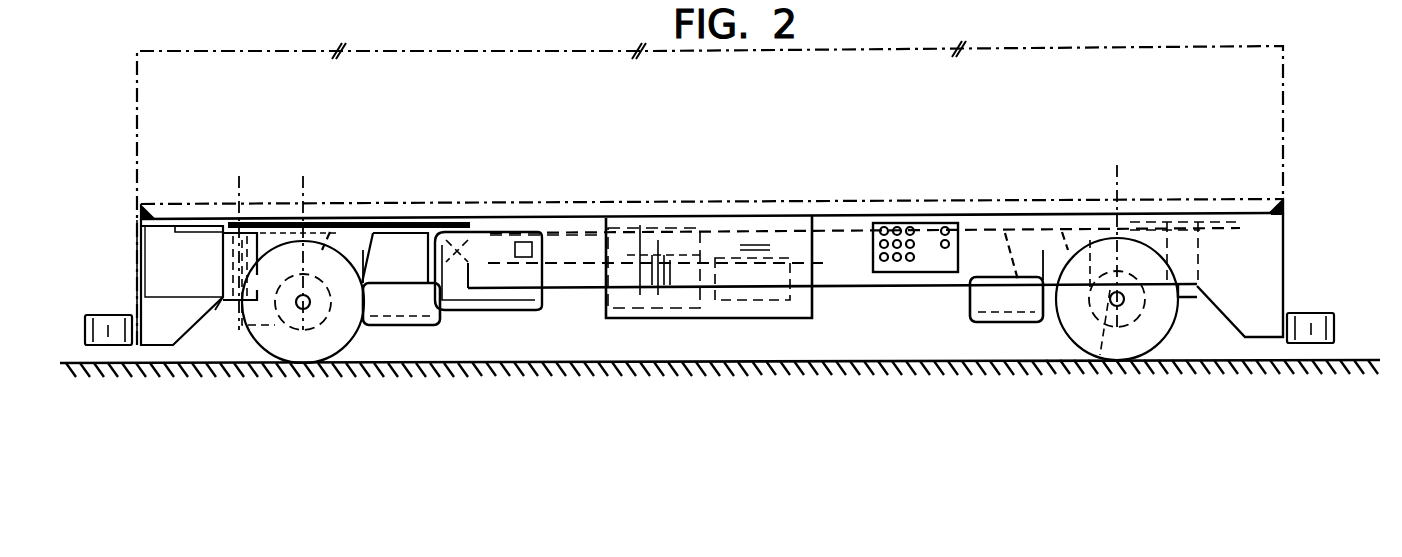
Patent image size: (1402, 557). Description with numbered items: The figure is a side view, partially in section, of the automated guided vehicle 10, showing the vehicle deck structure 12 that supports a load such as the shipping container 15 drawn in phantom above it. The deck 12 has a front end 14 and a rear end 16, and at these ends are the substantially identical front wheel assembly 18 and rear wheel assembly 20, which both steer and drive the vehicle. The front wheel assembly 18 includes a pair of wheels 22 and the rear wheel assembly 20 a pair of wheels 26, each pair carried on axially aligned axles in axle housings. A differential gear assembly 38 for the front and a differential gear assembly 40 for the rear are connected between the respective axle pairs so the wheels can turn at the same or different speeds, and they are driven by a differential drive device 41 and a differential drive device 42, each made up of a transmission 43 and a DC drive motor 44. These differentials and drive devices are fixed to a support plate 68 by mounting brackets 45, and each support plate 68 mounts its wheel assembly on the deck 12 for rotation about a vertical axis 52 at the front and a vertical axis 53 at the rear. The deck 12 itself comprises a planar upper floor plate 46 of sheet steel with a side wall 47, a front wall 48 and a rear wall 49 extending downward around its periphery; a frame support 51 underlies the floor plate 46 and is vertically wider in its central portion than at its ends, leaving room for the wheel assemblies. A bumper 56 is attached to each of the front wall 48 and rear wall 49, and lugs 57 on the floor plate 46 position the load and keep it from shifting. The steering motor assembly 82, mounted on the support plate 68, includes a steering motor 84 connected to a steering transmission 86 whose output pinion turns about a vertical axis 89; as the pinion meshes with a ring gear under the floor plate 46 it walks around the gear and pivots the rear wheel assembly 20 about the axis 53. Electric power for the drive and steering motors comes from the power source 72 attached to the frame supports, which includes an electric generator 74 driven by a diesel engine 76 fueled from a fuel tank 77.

The automated guided vehicle 10 is at (1118, 143).
The vehicle deck structure 12 is at (553, 214).
The front end 14 is at (1208, 213).
The shipping container 15 is at (1285, 84).
The rear end 16 is at (220, 226).
The front wheel assembly 18 is at (1174, 334).
The rear wheel assembly 20 is at (322, 358).
The wheels 22 is at (1130, 340).
The wheels 26 is at (276, 346).
The differential gear assembly 38 is at (1100, 350).
The differential gear assembly 40 is at (333, 213).
The differential drive device 41 is at (1015, 290).
The differential drive device 42 is at (458, 331).
The transmission 43 is at (372, 327).
The drive motor 44 is at (415, 327).
The mounting bracket 45 is at (380, 236).
The upper floor plate 46 is at (460, 236).
The side wall 47 is at (578, 218).
The front wall 48 is at (1290, 234).
The rear wall 49 is at (138, 245).
The frame support 51 is at (625, 205).
The vertical axis 52 is at (1118, 180).
The vertical axis 53 is at (303, 185).
The bumper 56 is at (105, 318).
The lug 57 is at (140, 206).
The support plate 68 is at (358, 232).
The power source 72 is at (815, 216).
The electric generator 74 is at (715, 205).
The diesel engine 76 is at (770, 312).
The fuel tank 77 is at (483, 238).
The steering motor assembly 82 is at (212, 272).
The steering motor 84 is at (225, 300).
The steering transmission 86 is at (230, 250).
The vertical axis 89 is at (240, 185).